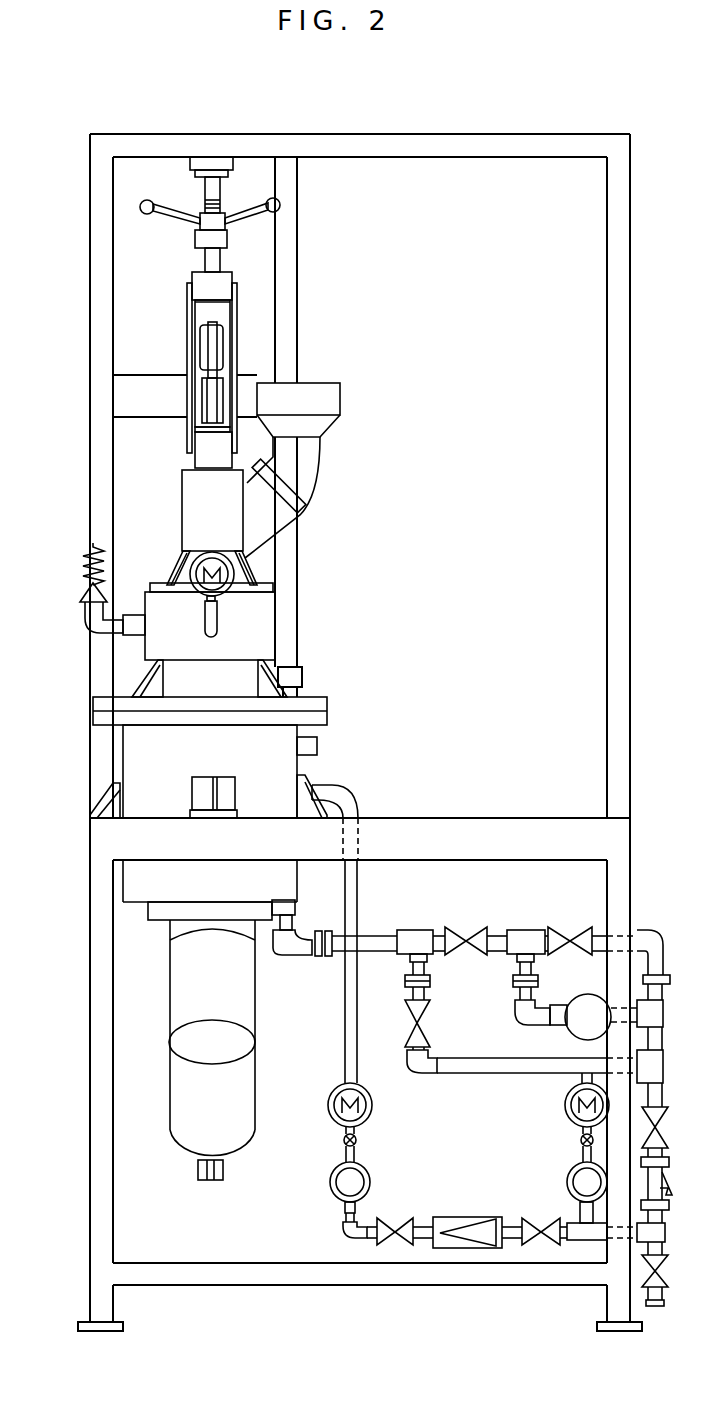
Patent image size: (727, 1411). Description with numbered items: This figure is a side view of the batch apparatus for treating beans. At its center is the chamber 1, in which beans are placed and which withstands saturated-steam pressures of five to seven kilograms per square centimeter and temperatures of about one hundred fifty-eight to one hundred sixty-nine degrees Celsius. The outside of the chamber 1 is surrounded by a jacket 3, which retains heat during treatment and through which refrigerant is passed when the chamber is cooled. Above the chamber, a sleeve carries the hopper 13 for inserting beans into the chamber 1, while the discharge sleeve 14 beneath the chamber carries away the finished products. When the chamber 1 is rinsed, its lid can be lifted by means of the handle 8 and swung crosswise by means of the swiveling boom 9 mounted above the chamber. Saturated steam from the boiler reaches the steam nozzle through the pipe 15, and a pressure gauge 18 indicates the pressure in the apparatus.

The chamber 1 is at (265, 628).
The jacket 3 is at (145, 745).
The handle 8 is at (281, 206).
The swiveling boom 9 is at (197, 238).
The hopper 13 is at (315, 392).
The discharge sleeve 14 is at (175, 975).
The pipe 15 is at (205, 625).
The pressure gauge 18 is at (245, 560).